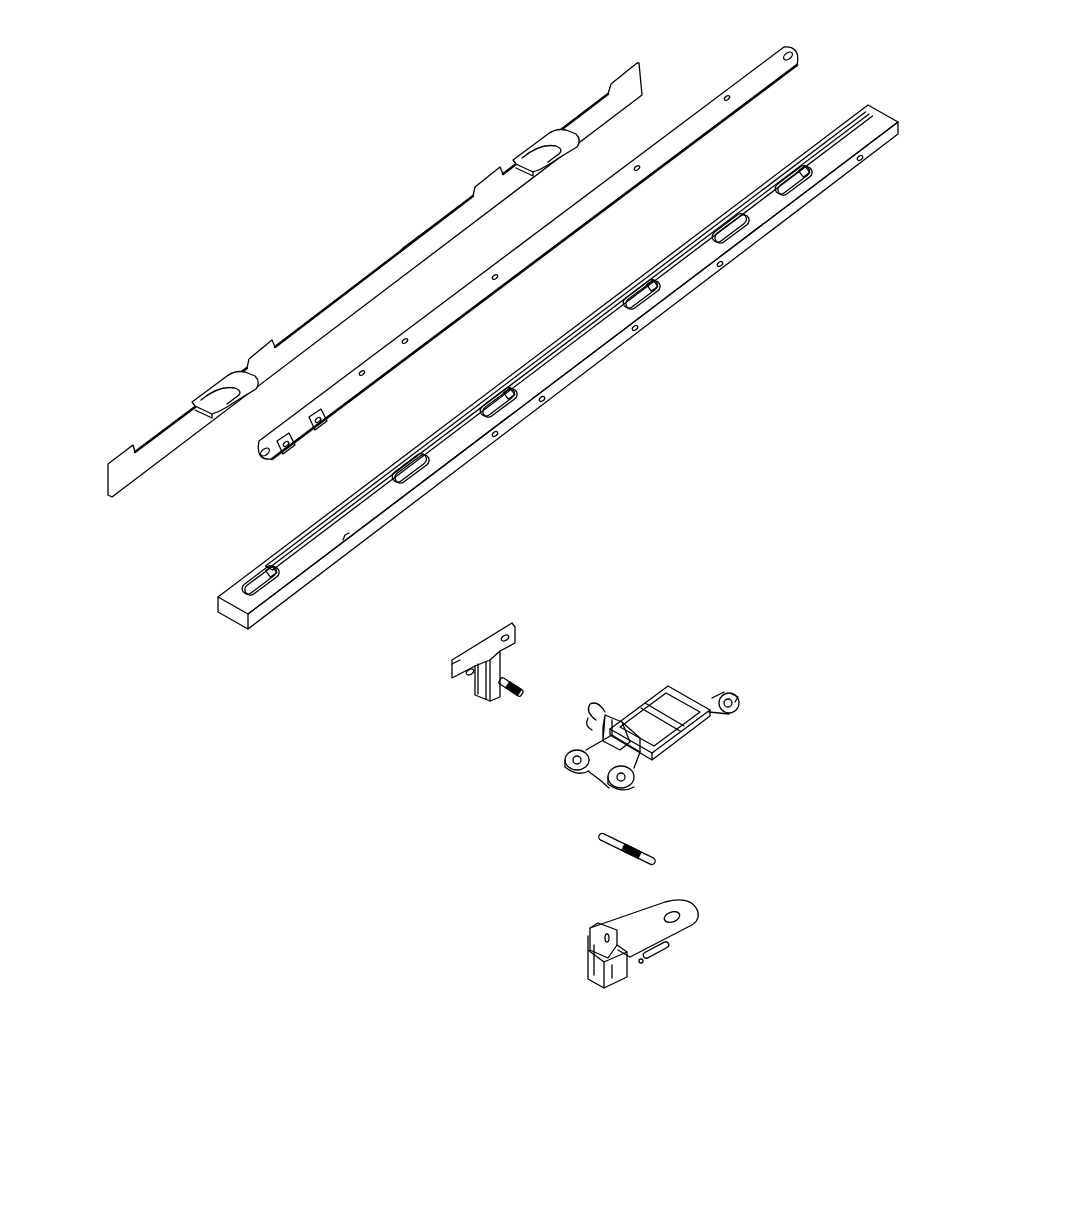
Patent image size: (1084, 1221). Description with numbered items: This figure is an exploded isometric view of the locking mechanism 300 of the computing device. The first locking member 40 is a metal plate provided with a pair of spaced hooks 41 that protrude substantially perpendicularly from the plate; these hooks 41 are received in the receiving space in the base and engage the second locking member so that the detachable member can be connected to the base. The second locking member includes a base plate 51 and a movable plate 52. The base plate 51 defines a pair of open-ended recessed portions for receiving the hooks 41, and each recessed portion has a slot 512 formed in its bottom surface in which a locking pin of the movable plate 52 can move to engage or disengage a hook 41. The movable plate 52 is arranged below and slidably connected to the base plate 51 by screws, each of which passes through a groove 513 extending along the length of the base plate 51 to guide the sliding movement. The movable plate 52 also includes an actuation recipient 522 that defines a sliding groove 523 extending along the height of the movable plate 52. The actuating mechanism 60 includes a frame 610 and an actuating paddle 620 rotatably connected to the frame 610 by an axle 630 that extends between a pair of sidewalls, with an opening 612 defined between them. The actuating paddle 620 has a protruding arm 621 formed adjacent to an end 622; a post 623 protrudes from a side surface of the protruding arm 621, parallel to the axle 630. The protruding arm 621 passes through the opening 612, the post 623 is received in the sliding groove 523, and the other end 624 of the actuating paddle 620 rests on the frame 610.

The mounting apparatus 300 is at (258, 97).
The first locking member 40 is at (592, 121).
The hooks 41 is at (523, 159).
The base plate 51 is at (848, 135).
The slot 512 is at (733, 232).
The groove 513 is at (793, 187).
The movable plate 52 is at (742, 85).
The actuation recipient 522 is at (515, 638).
The sliding groove 523 is at (500, 665).
The post 623 is at (510, 693).
The actuating mechanism 60 is at (730, 602).
The frame 610 is at (690, 690).
The opening 612 is at (590, 777).
The axle 630 is at (643, 850).
The actuating paddle 620 is at (674, 968).
The protruding arm 621 is at (613, 928).
The end 622 is at (600, 972).
The other end 624 is at (690, 918).